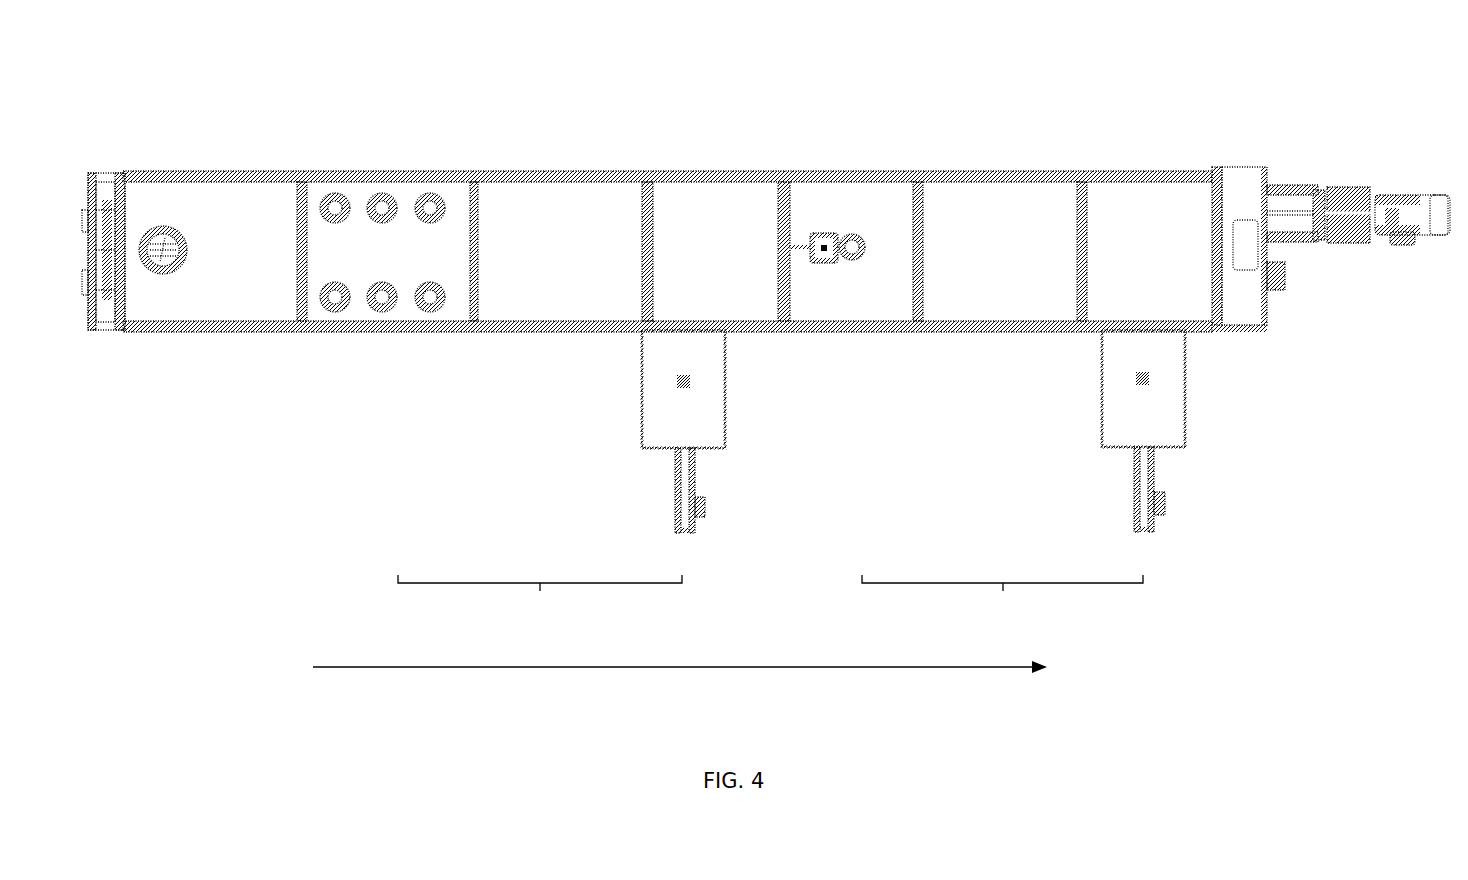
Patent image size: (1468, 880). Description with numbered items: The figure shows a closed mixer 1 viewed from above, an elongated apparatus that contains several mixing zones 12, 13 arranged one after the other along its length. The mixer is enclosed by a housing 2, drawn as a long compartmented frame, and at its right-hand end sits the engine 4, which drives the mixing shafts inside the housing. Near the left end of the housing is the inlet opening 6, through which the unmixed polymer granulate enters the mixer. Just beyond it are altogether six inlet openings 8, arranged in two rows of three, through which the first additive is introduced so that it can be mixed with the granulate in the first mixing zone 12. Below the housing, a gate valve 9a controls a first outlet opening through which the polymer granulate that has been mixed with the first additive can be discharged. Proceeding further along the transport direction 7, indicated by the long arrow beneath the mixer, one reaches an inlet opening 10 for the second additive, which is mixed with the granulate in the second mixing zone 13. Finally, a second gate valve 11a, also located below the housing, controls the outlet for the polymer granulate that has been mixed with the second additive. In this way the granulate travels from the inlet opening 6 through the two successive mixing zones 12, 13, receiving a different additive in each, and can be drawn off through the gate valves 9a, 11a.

The closed mixer 1 is at (714, 144).
The housing 2 is at (240, 168).
The engine 4 is at (1410, 195).
The inlet opening 6 is at (160, 272).
The transport direction 7 is at (612, 668).
The inlet openings 8 is at (335, 300).
The gate valve 9a is at (708, 405).
The inlet opening 10 is at (852, 250).
The gate valve 11a is at (1168, 400).
The mixing zone 12 is at (540, 606).
The mixing zone 13 is at (1002, 606).